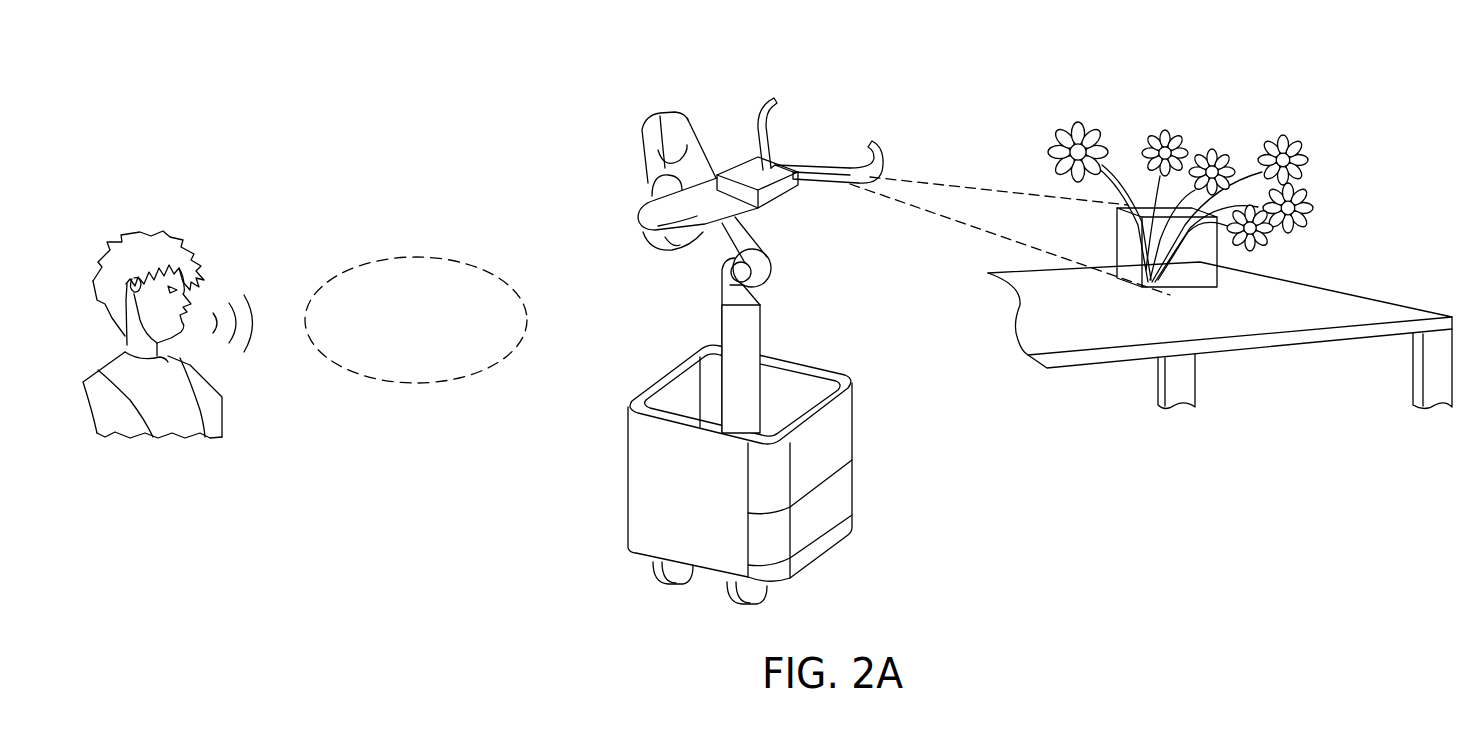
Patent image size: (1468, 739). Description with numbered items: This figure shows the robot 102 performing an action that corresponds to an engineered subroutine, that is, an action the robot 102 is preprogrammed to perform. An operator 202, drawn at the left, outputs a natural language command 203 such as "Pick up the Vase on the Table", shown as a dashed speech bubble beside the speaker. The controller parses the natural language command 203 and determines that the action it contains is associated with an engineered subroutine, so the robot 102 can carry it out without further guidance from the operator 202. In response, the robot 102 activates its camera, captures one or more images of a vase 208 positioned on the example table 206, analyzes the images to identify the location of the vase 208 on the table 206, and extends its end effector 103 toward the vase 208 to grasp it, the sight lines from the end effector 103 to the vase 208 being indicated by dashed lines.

The robot 102 is at (673, 112).
The end effector 103 is at (828, 169).
The operator 202 is at (147, 233).
The natural language command 203 is at (410, 257).
The table 206 is at (1392, 303).
The vase 208 is at (1217, 288).